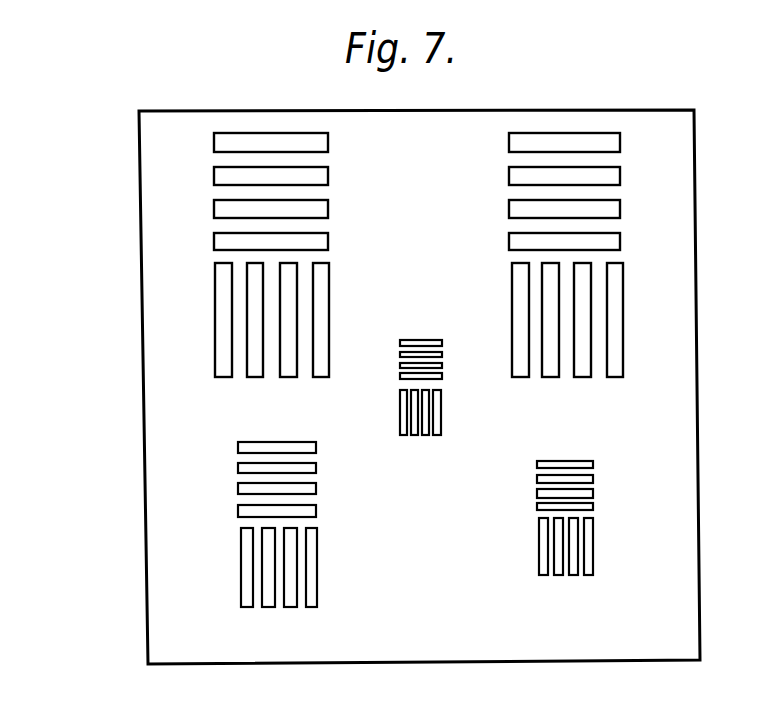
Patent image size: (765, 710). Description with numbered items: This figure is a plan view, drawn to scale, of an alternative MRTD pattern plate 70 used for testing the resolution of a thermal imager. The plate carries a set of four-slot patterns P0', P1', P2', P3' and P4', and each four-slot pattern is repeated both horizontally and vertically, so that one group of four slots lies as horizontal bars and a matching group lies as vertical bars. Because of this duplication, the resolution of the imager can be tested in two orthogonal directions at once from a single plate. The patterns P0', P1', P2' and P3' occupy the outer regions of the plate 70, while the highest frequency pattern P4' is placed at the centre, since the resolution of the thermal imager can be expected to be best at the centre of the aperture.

The alternative pattern plate 70 is at (112, 158).
The four slot pattern P0' is at (243, 255).
The four slot pattern P1' is at (593, 255).
The four slot pattern P2' is at (599, 518).
The four slot pattern P3' is at (239, 524).
The highest frequency pattern P4' is at (390, 387).